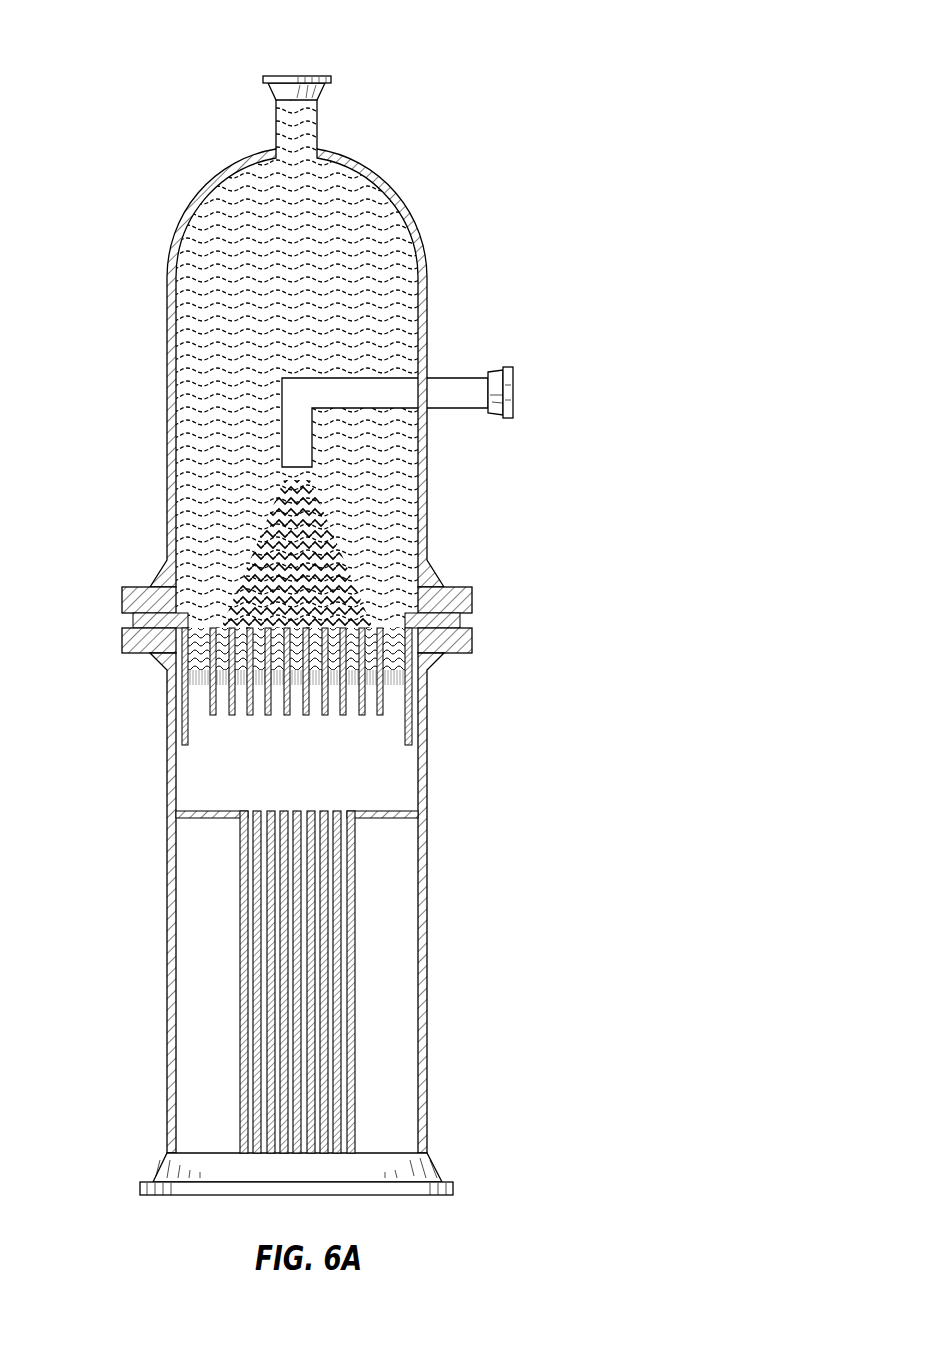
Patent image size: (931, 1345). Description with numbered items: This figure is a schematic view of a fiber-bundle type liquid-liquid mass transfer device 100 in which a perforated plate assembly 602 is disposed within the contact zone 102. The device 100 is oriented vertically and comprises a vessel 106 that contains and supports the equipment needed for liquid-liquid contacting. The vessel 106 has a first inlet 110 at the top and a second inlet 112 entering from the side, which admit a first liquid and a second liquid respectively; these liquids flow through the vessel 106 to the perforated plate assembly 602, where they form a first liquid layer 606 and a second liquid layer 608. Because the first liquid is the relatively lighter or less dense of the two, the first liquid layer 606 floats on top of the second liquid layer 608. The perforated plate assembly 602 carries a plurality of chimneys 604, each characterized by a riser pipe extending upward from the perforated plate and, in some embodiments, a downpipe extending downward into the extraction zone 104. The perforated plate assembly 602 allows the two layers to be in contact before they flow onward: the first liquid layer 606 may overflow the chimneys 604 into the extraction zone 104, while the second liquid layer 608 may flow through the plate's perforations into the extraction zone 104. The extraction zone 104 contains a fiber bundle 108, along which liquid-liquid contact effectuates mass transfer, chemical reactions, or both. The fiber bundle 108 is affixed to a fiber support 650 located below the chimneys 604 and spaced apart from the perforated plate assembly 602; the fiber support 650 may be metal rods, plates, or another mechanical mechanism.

The fiber-bundle type liquid-liquid mass transfer device 100 is at (547, 52).
The contact zone 102 is at (160, 663).
The extraction zone 104 is at (113, 678).
The vessel 106 is at (412, 208).
The fiber bundle 108 is at (354, 920).
The first inlet 110 is at (279, 75).
The second inlet 112 is at (515, 376).
The perforated plate assembly 602 is at (404, 680).
The chimneys 604 is at (403, 660).
The first liquid layer 606 is at (396, 254).
The second liquid layer 608 is at (397, 624).
The fiber support 650 is at (394, 808).